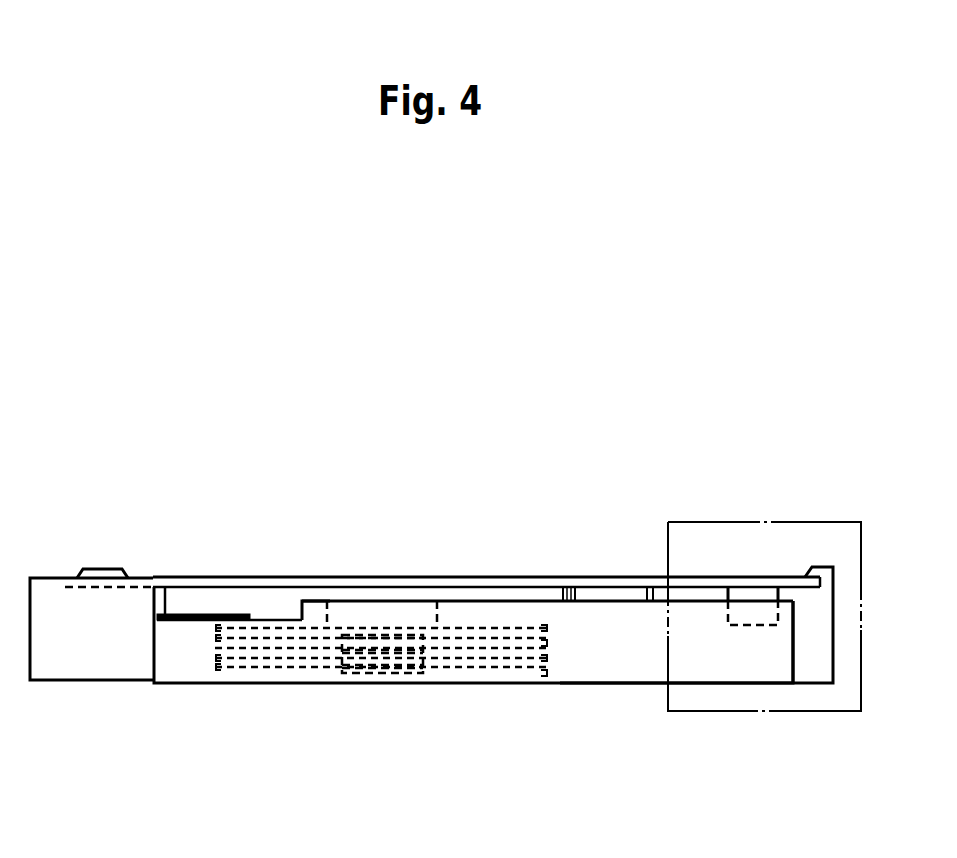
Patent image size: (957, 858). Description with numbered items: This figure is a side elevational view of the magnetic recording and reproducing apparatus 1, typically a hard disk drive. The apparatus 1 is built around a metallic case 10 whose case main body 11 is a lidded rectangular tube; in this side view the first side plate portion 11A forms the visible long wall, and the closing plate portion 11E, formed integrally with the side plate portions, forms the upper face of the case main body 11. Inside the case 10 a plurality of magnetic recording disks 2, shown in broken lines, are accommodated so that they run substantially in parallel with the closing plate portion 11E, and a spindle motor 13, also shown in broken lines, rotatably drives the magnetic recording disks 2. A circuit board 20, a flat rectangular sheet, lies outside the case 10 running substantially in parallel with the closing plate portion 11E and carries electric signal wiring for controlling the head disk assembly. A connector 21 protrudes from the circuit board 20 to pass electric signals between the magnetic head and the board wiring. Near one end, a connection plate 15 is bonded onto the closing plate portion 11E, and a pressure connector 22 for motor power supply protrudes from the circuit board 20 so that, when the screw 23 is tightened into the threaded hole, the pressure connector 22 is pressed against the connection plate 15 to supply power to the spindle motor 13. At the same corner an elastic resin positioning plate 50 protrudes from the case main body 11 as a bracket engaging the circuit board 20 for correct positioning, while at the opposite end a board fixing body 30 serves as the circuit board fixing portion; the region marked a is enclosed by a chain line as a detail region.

The magnetic recording and reproducing apparatus 1 is at (168, 446).
The magnetic recording disks 2 is at (230, 663).
The case 10 is at (342, 601).
The case main body 11 is at (262, 684).
The first side plate portion 11A is at (607, 642).
The closing plate portion 11E is at (549, 600).
The spindle motor 13 is at (442, 618).
The connection plate 15 is at (232, 616).
The circuit board 20 is at (438, 577).
The connector 21 is at (747, 593).
The pressure connector 22 is at (160, 586).
The screw 23 is at (100, 568).
The board fixing body 30 is at (808, 670).
The positioning plate 50 is at (46, 592).
The region a is at (796, 522).